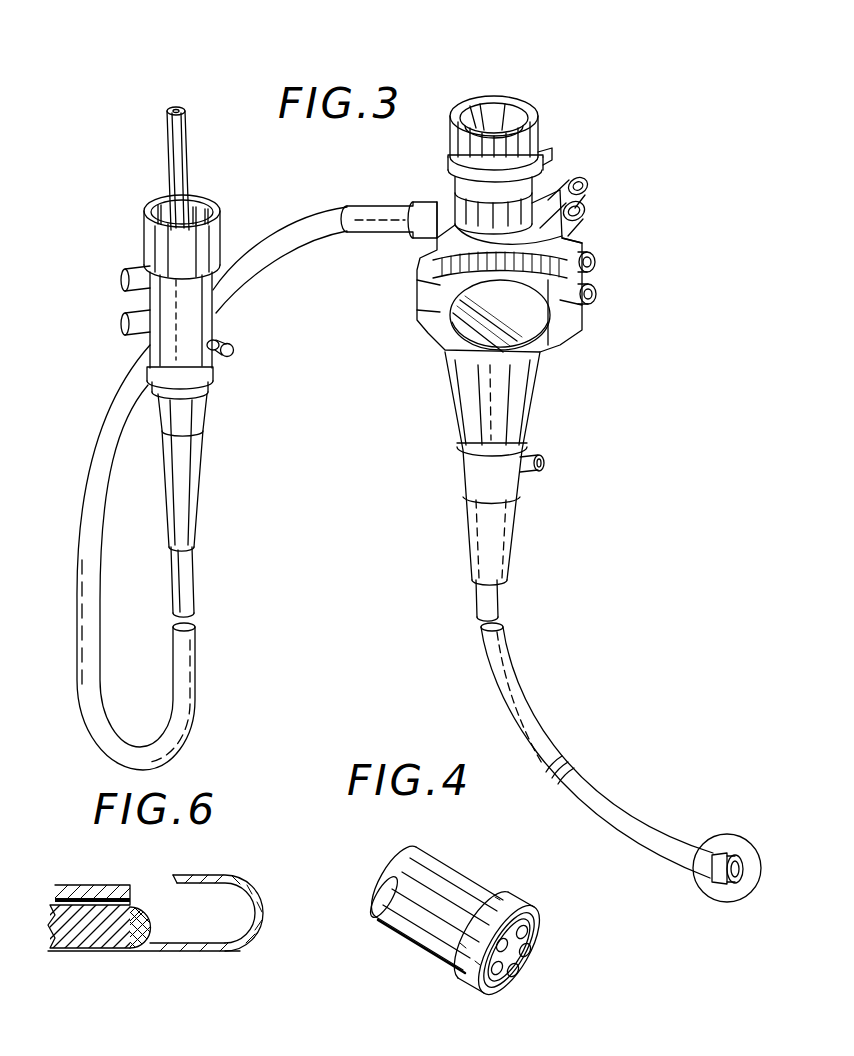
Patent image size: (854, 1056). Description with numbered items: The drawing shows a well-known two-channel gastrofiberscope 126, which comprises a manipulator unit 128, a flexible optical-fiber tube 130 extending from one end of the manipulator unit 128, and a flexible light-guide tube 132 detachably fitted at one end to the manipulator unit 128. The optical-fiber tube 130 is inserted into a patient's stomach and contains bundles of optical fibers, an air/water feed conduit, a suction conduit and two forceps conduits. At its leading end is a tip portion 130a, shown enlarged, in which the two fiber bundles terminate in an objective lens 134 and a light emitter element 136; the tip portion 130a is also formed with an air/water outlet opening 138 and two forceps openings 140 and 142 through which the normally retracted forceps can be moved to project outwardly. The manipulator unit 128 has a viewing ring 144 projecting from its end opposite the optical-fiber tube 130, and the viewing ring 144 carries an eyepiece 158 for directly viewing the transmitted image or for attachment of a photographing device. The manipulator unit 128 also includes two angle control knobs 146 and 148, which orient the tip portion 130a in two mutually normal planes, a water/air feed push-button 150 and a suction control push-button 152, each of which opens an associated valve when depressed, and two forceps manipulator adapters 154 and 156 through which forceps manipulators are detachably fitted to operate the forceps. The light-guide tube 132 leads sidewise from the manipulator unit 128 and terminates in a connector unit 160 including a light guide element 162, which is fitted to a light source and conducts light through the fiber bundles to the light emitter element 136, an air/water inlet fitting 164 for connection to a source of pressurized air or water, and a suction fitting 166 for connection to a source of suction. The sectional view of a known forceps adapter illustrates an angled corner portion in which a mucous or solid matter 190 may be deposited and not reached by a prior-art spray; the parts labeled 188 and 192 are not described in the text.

In FIG. 3, the two-channel gastrofiberscope 126 is at (360, 437).
In FIG. 3, the manipulator unit 128 is at (508, 358).
In FIG. 3, the flexible optical-fiber tube 130 is at (621, 762).
In FIG. 3, the tip portion 130a is at (722, 833).
In FIG. 4, the tip portion 130a is at (481, 913).
In FIG. 3, the flexible light-guide tube 132 is at (197, 650).
In FIG. 4, the objective lens 134 is at (531, 949).
In FIG. 4, the light emitter element 136 is at (524, 925).
In FIG. 4, the air/water outlet opening 138 is at (519, 970).
In FIG. 4, the forceps opening 140 is at (499, 975).
In FIG. 4, the forceps opening 142 is at (501, 922).
In FIG. 3, the viewing ring 144 is at (482, 138).
In FIG. 3, the angle control knob 146 is at (457, 363).
In FIG. 3, the angle control knob 148 is at (433, 330).
In FIG. 3, the water/air feed push-button 150 is at (598, 297).
In FIG. 3, the suction control push-button 152 is at (597, 262).
In FIG. 3, the forceps manipulator adapter 154 is at (579, 178).
In FIG. 3, the forceps manipulator adapter 156 is at (587, 213).
In FIG. 3, the eyepiece 158 is at (515, 122).
In FIG. 3, the connector unit 160 is at (213, 306).
In FIG. 3, the light guide element 162 is at (187, 135).
In FIG. 3, the air/water inlet fitting 164 is at (143, 266).
In FIG. 3, the suction fitting 166 is at (228, 360).
In FIG. 6, the cover sheet 188 is at (208, 940).
In FIG. 6, the mucous or solid matter 190 is at (155, 935).
In FIG. 6, the seal packing 192 is at (148, 905).